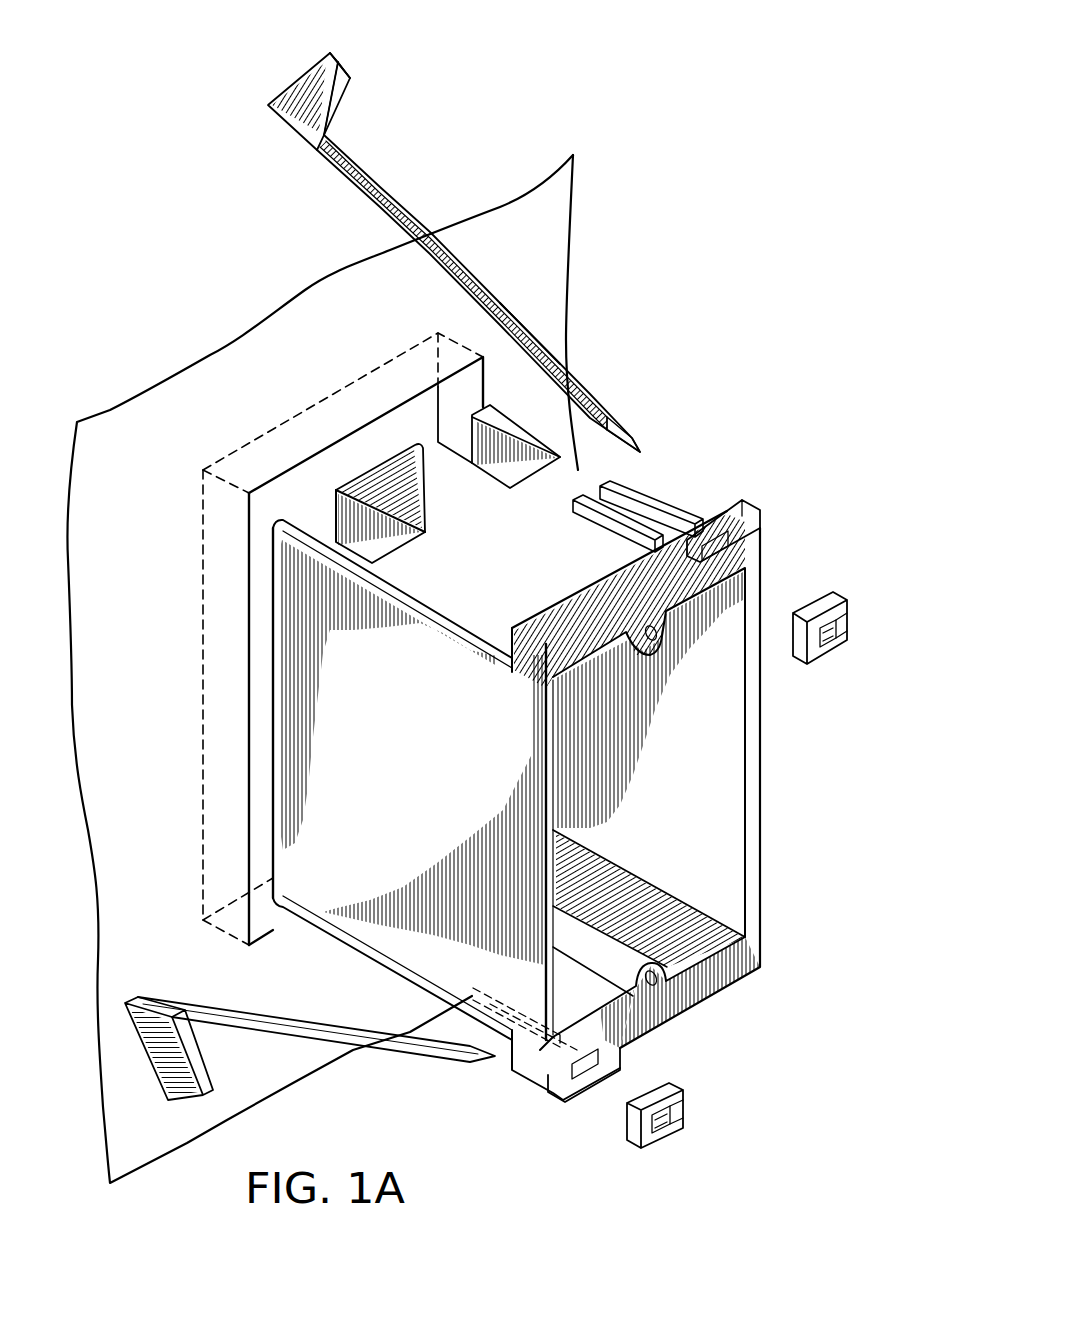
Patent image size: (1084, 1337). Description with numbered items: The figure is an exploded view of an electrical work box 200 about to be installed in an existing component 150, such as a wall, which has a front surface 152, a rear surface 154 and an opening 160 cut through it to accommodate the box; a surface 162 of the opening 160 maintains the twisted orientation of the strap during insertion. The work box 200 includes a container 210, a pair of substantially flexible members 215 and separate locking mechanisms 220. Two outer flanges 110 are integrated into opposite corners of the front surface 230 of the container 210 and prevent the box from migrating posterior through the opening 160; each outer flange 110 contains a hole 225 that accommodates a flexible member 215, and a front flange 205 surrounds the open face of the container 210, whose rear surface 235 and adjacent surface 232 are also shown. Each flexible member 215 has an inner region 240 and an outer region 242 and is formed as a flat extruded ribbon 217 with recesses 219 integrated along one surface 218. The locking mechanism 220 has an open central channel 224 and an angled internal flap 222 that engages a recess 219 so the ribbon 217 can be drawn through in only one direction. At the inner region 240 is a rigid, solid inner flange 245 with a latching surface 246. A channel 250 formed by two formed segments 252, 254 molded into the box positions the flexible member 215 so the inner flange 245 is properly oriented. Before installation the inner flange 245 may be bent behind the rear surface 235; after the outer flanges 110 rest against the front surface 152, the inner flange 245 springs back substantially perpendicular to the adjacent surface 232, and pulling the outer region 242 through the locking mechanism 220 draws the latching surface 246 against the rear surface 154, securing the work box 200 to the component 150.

The outer flange 110 is at (727, 510).
The component 150 is at (350, 322).
The front surface 152 is at (245, 548).
The rear surface 154 is at (202, 702).
The opening 160 is at (296, 484).
The surface of the opening 162 is at (250, 460).
The electrical work box 200 is at (815, 937).
The front flange 205 is at (762, 568).
The container 210 is at (760, 860).
The substantially flexible member 215 is at (385, 577).
The ribbon 217 is at (253, 1018).
The surface of the ribbon 218 is at (527, 330).
The recess 219 is at (483, 297).
The locking mechanism 220 is at (785, 884).
The internal flap 222 is at (848, 630).
The open central channel 224 is at (832, 640).
The hole 225 is at (735, 543).
The front surface 230 is at (760, 773).
The adjacent surface 232 is at (405, 477).
The rear surface 235 is at (273, 807).
The inner region 240 is at (327, 135).
The outer region 242 is at (597, 395).
The inner flange 245 is at (337, 63).
The latching surface 246 is at (335, 108).
The channel 250 is at (639, 469).
The formed segment 252 is at (657, 517).
The formed segment 254 is at (613, 523).